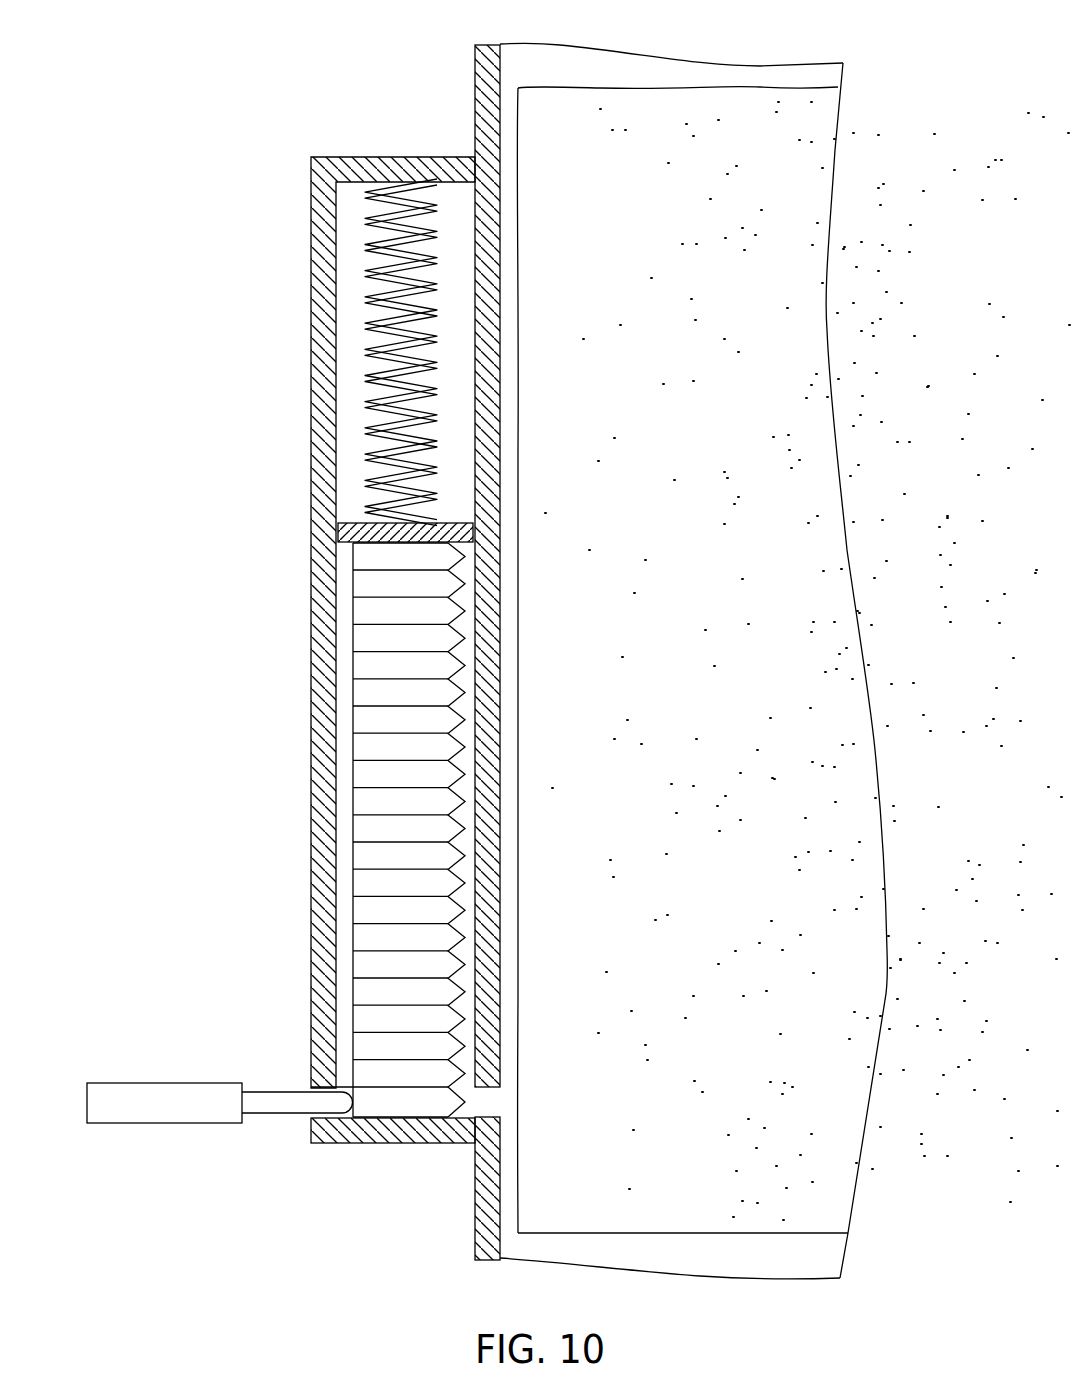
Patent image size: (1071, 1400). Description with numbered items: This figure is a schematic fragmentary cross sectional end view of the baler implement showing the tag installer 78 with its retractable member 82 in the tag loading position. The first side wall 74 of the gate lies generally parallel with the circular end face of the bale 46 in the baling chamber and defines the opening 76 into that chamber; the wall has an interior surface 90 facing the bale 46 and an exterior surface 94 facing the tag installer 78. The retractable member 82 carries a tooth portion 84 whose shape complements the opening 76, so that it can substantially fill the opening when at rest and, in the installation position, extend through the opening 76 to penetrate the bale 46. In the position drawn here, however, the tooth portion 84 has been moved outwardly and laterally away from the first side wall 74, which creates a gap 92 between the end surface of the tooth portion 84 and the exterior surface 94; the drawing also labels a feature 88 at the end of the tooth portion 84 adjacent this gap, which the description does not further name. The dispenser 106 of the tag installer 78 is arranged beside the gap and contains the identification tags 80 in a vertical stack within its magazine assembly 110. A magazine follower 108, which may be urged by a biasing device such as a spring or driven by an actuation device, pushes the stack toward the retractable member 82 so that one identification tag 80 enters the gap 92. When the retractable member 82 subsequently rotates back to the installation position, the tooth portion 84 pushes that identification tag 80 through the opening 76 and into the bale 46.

The bale 46 is at (500, 133).
The first side wall 74 is at (500, 68).
The opening 76 is at (497, 1110).
The tag installer 78 is at (158, 421).
The identification tag 80 is at (378, 611).
The retractable member 82 is at (188, 1097).
The tooth portion 84 is at (284, 1100).
The rod tip 88 is at (350, 1100).
The interior surface 90 is at (500, 1233).
The gap 92 is at (476, 1103).
The exterior surface 94 is at (475, 1226).
The dispenser 106 is at (290, 263).
The magazine follower 108 is at (343, 530).
The magazine assembly 110 is at (311, 402).